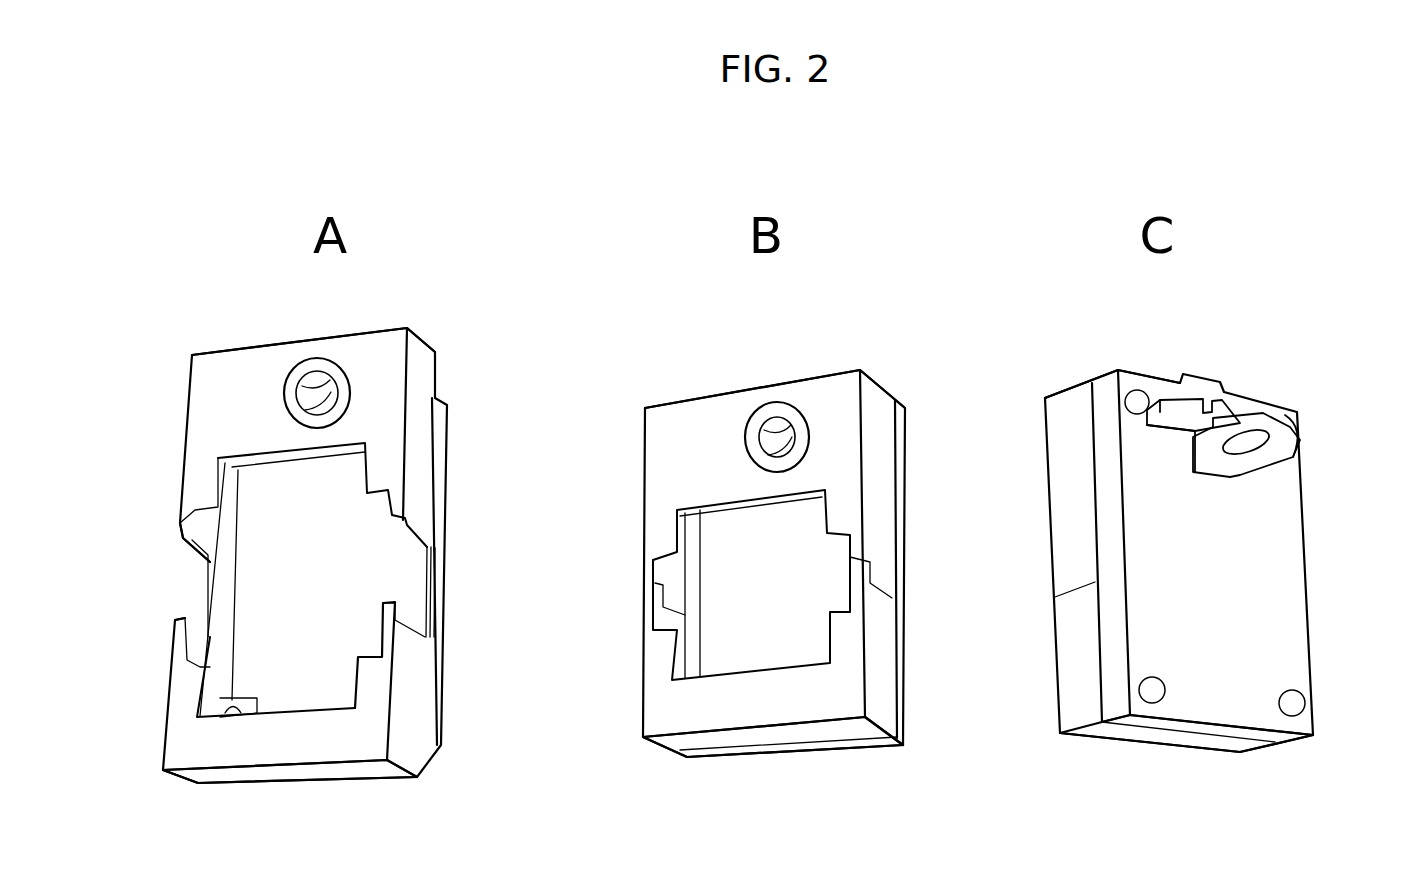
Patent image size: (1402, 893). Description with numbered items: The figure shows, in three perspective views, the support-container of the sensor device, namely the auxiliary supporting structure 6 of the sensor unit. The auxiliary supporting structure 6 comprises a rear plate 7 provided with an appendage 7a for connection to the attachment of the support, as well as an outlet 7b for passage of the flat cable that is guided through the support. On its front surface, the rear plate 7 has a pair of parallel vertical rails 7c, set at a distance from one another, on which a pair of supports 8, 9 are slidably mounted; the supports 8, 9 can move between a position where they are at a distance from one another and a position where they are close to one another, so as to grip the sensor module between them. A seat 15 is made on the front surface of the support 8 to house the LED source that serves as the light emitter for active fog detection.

The auxiliary supporting structure 6 is at (140, 753).
The rear plate 7 is at (267, 540).
The appendage 7a is at (1273, 452).
The outlet 7b is at (1173, 408).
The parallel vertical rails 7c is at (428, 587).
The support 8 is at (217, 378).
The support 9 is at (293, 740).
The seat 15 is at (308, 385).